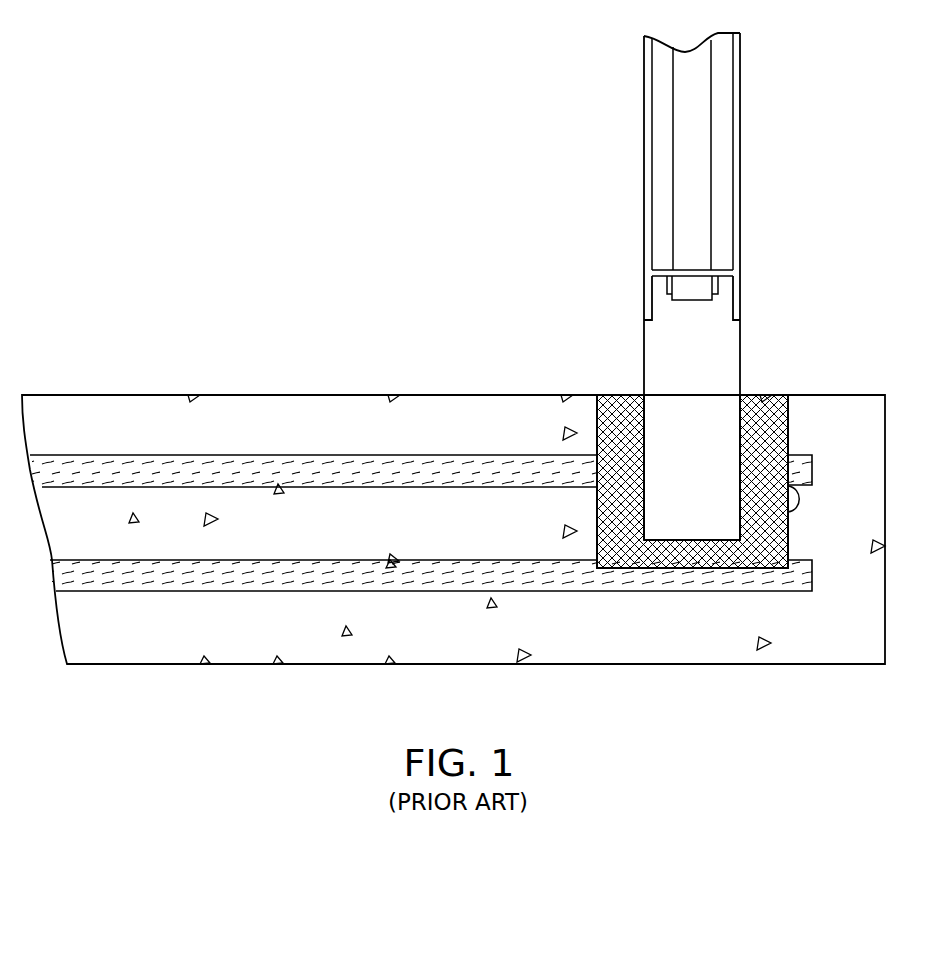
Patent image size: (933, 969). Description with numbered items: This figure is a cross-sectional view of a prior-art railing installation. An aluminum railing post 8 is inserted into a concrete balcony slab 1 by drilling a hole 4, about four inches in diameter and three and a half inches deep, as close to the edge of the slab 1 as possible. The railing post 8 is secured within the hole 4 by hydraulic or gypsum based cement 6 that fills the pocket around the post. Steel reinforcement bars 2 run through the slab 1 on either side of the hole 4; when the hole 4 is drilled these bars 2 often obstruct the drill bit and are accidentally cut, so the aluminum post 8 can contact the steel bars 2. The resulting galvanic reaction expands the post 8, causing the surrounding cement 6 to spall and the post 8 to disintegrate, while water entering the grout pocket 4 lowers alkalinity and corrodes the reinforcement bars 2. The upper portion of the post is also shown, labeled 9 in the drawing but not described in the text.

The concrete balcony slab 1 is at (299, 386).
The steel reinforcement bars 2 is at (200, 451).
The hole 4 is at (786, 392).
The hydraulic or gypsum based cement 6 is at (621, 394).
The railing post 8 is at (728, 345).
The post 9 is at (690, 214).